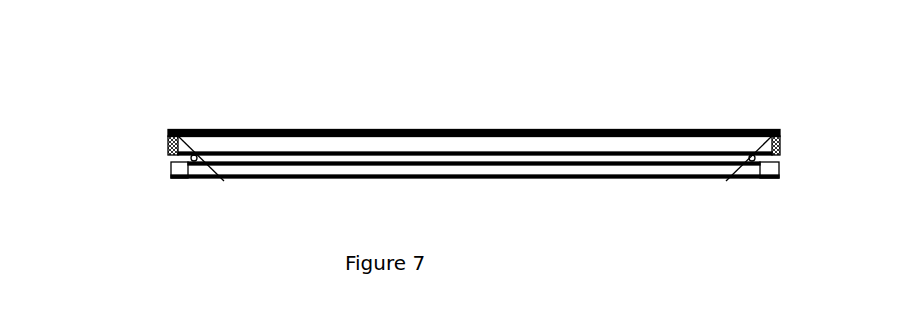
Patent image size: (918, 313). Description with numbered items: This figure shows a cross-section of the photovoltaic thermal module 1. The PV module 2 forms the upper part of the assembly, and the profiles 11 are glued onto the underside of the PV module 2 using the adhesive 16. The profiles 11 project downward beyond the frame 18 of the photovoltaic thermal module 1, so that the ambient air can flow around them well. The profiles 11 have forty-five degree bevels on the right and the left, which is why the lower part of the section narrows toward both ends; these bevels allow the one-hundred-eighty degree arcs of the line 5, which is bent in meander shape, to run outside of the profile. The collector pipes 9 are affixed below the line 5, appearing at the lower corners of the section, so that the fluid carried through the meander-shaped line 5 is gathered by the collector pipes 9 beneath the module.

The photovoltaic thermal module 1 is at (423, 118).
The PV module 2 is at (483, 131).
The line 5 is at (645, 163).
The collector pipes 9 is at (172, 165).
The profiles 11 is at (552, 147).
The adhesive 16 is at (395, 133).
The frame 18 is at (168, 132).